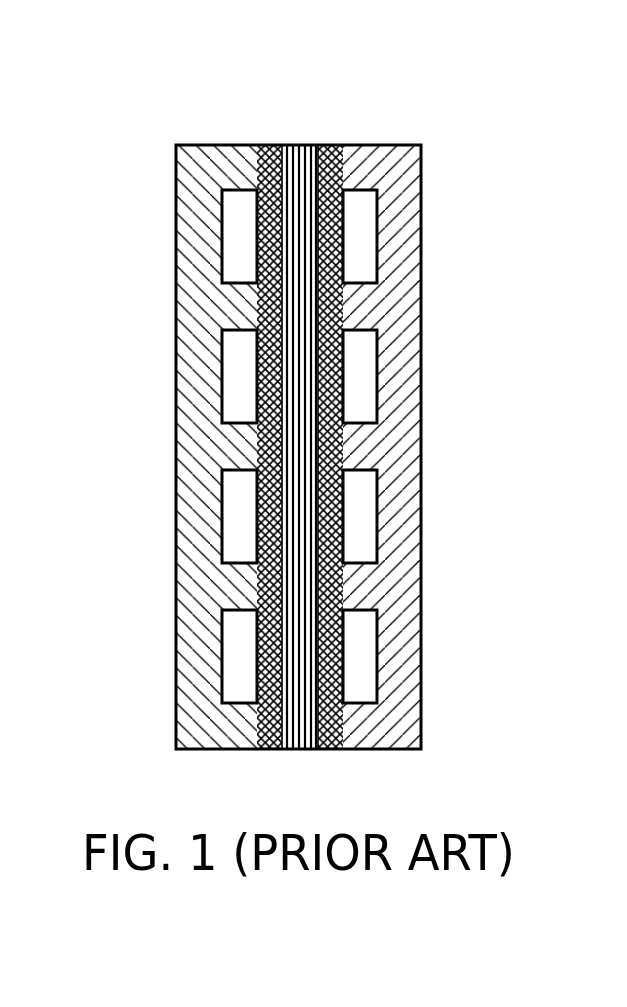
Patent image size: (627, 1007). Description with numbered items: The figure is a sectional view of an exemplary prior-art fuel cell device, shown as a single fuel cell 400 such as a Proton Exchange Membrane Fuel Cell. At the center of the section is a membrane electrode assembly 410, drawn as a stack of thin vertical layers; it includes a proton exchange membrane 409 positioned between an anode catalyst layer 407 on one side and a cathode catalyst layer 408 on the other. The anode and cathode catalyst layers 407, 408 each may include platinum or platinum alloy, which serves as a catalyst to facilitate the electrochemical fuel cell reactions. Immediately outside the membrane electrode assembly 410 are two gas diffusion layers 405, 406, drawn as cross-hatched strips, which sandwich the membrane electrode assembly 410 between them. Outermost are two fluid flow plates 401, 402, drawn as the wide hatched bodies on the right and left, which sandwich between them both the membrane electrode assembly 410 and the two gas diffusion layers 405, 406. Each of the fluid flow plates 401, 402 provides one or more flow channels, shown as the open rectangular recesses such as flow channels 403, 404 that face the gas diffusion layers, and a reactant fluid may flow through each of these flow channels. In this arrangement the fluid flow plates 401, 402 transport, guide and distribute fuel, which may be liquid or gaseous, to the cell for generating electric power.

The single fuel cell 400 is at (488, 117).
The fluid flow plate 401 is at (408, 216).
The fluid flow plate 402 is at (190, 217).
The flow channel 403 is at (363, 387).
The flow channel 404 is at (232, 381).
The gas diffusion layer 405 is at (330, 749).
The gas diffusion layer 406 is at (270, 749).
The anode catalyst layer 407 is at (311, 145).
The cathode catalyst layer 408 is at (288, 145).
The proton exchange membrane 409 is at (300, 145).
The membrane electrode assembly 410 is at (300, 433).